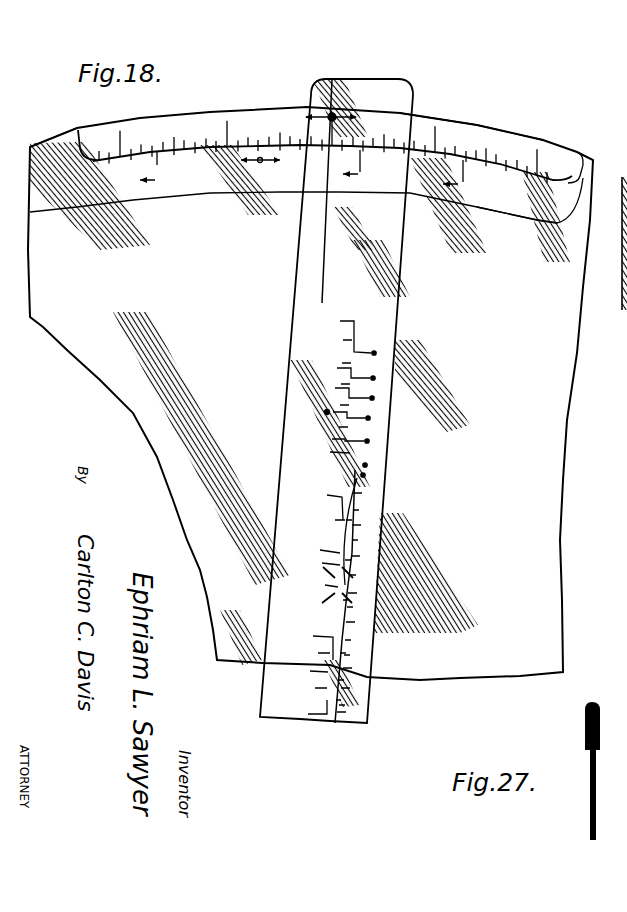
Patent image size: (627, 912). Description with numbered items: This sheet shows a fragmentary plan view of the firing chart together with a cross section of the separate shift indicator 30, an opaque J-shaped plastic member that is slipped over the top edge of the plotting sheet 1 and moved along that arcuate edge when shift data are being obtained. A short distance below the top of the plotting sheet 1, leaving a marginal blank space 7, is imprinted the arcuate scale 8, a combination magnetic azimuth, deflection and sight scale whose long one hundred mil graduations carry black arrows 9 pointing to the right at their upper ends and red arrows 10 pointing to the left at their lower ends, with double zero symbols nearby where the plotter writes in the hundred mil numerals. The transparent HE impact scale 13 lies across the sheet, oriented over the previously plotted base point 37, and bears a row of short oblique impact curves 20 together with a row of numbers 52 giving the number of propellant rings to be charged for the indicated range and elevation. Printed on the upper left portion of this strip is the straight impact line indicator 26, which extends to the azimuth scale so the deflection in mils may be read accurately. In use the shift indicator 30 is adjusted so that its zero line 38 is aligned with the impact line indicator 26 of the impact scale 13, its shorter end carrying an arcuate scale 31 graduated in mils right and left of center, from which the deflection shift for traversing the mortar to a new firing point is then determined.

In FIG. 18, the plotting sheet 1 is at (310, 407).
In FIG. 27, the plotting sheet 1 is at (597, 809).
In FIG. 18, the marginal blank space 7 is at (82, 160).
In FIG. 18, the arcuate scale 8 is at (33, 148).
In FIG. 18, the black arrows 9 is at (70, 147).
In FIG. 18, the red arrows 10 is at (525, 209).
In FIG. 18, the HE impact scale 13 is at (412, 103).
In FIG. 18, the row of impact curves 20 is at (346, 316).
In FIG. 18, the impact line indicator 26 is at (323, 253).
In FIG. 18, the shift indicator 30 is at (500, 121).
In FIG. 27, the shift indicator 30 is at (585, 723).
In FIG. 18, the arcuate scale 31 is at (551, 168).
In FIG. 18, the base point 37 is at (338, 587).
In FIG. 18, the zero line 38 is at (330, 113).
In FIG. 18, the row of numbers 52 is at (385, 313).